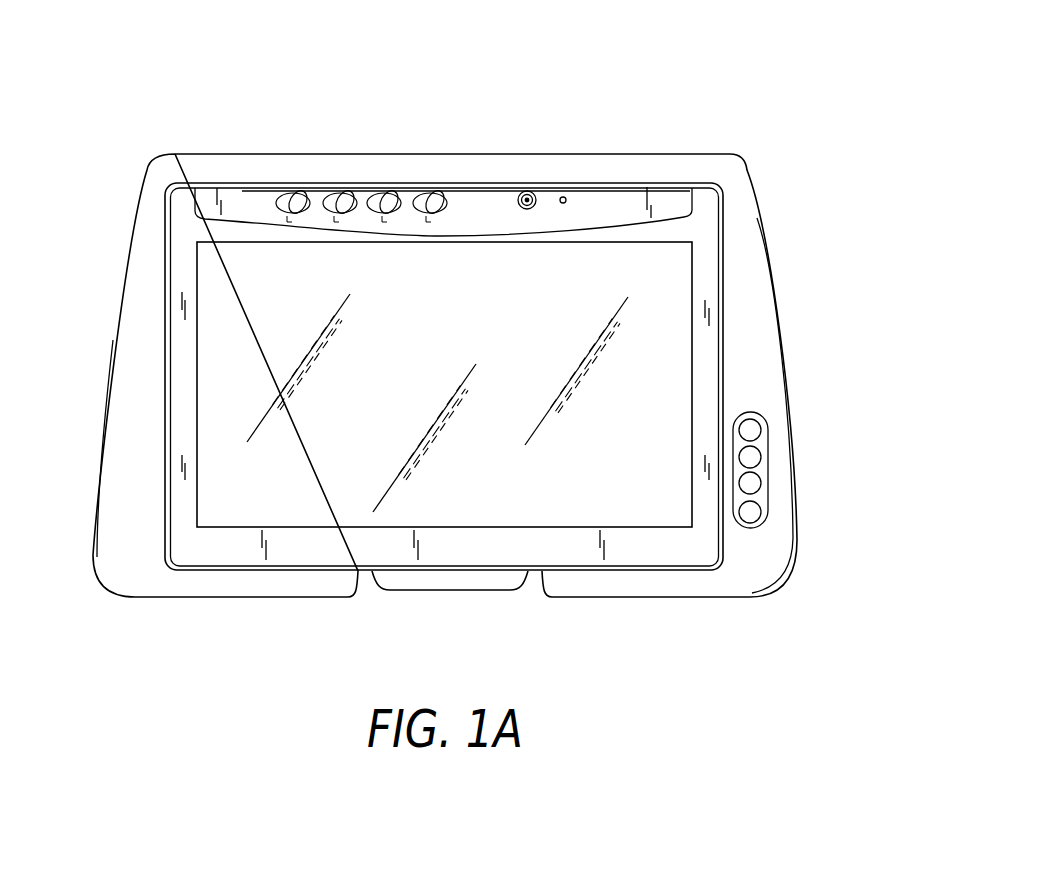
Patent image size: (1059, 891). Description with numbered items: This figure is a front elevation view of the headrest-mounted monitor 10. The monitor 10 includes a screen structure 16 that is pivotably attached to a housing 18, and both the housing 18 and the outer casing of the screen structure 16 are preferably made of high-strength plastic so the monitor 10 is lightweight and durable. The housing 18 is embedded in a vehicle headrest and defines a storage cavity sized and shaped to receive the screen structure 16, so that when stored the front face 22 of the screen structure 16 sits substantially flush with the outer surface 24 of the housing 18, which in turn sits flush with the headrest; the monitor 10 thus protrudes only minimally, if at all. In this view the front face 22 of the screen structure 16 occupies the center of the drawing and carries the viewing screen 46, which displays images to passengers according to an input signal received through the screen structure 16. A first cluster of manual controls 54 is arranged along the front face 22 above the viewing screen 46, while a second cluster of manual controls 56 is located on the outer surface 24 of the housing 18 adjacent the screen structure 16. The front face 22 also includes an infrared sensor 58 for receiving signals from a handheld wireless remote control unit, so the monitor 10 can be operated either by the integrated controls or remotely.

The monitor 10 is at (740, 117).
The screen structure 16 is at (186, 233).
The housing 18 is at (140, 333).
The front face 22 is at (180, 383).
The outer surface 24 is at (750, 292).
The viewing screen 46 is at (238, 483).
The first cluster of manual controls 54 is at (437, 197).
The second cluster of manual controls 56 is at (755, 512).
The infrared sensor 58 is at (527, 191).